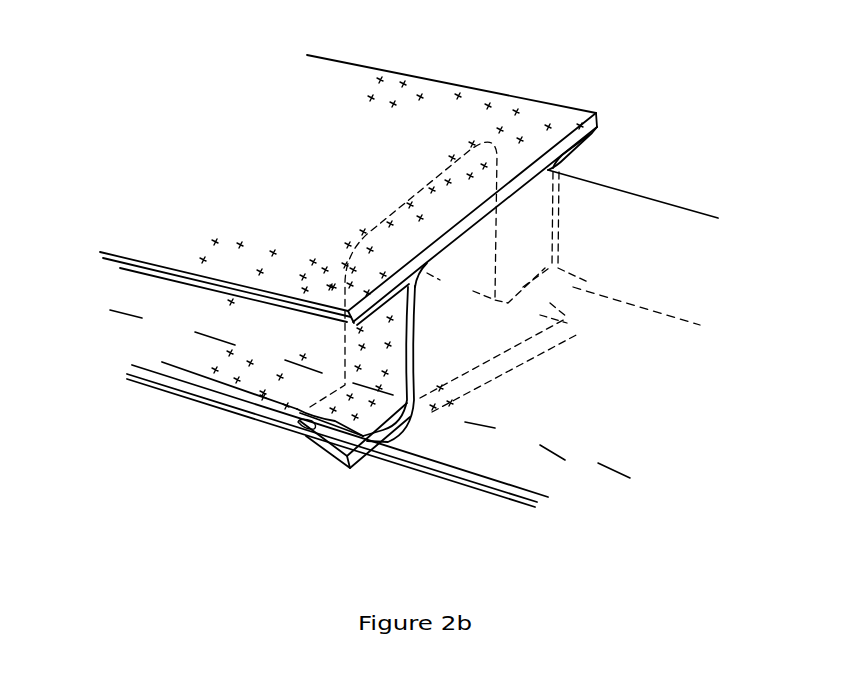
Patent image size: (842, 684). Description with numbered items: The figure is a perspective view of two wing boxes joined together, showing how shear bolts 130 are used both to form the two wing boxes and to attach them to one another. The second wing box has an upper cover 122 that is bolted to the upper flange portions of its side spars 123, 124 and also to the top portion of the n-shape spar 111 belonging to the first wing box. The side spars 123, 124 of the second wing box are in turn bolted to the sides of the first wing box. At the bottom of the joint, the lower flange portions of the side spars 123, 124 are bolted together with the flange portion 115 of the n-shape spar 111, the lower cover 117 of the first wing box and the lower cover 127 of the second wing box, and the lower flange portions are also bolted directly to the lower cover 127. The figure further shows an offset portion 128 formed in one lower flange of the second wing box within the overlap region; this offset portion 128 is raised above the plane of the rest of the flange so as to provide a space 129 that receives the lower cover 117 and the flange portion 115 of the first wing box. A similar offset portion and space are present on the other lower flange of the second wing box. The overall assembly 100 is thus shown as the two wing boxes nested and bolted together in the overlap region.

The composite structure 100 is at (643, 77).
The n-shape spar 111 is at (677, 218).
The flange portion 115 is at (477, 477).
The lower cover 117 is at (399, 462).
The upper cover 122 is at (400, 137).
The side spar 123 is at (228, 372).
The side spar 124 is at (582, 150).
The lower cover 127 is at (326, 453).
The offset portion 128 is at (303, 435).
The space 129 is at (273, 437).
The shear bolts 130 is at (228, 263).